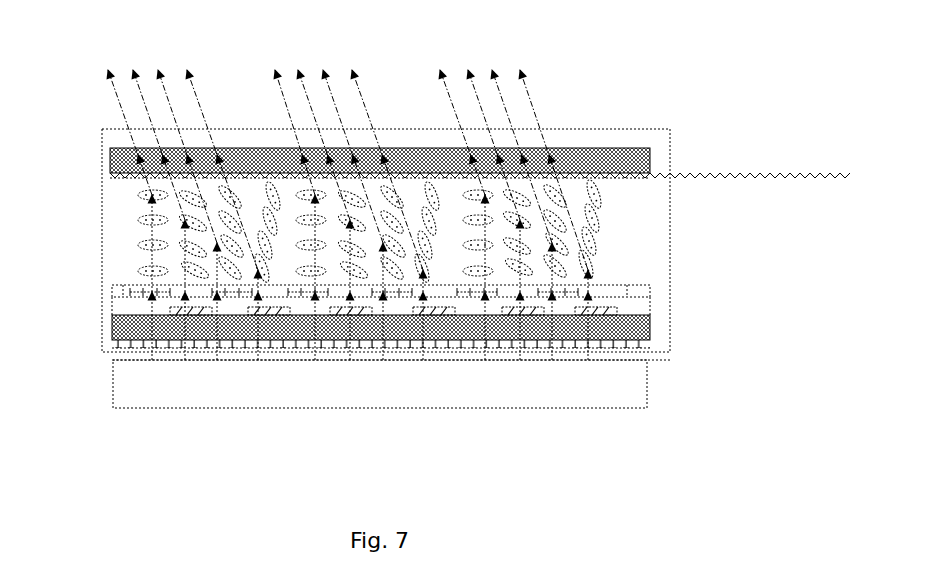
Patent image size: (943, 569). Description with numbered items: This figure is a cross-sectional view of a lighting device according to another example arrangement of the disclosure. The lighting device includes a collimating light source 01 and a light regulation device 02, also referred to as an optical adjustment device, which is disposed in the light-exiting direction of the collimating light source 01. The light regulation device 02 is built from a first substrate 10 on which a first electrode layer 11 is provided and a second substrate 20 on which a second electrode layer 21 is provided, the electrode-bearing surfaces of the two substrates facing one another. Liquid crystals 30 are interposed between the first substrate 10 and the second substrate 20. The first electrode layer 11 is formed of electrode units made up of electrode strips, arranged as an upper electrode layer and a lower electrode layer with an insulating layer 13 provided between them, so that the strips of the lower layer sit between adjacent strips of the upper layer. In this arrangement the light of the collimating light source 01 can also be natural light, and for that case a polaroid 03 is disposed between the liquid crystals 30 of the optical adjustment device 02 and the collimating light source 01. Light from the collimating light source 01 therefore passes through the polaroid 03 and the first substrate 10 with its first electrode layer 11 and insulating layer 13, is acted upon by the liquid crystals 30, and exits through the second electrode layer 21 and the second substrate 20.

The collimating light source 01 is at (622, 407).
The light regulation device 02 is at (587, 129).
The polaroid 03 is at (115, 346).
The first substrate 10 is at (650, 337).
The first electrode layer 11 is at (123, 312).
The insulating layer 13 is at (647, 297).
The second substrate 20 is at (650, 150).
The second electrode layer 21 is at (650, 176).
The liquid crystals 30 is at (603, 210).